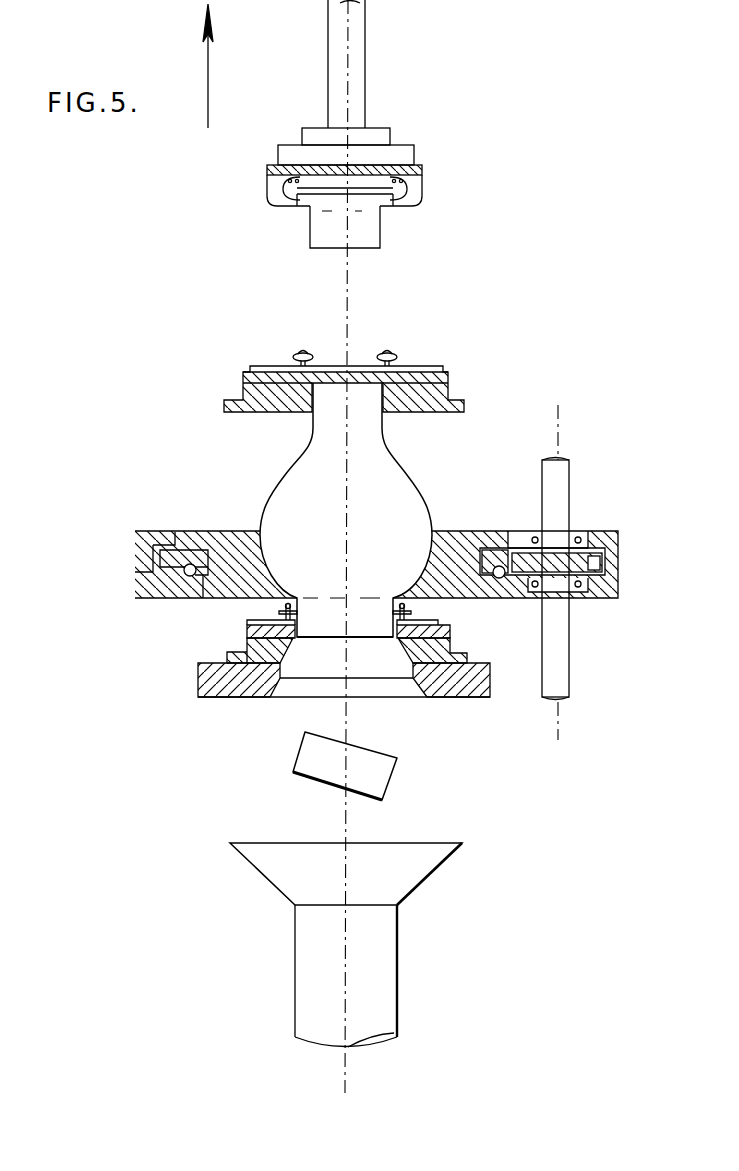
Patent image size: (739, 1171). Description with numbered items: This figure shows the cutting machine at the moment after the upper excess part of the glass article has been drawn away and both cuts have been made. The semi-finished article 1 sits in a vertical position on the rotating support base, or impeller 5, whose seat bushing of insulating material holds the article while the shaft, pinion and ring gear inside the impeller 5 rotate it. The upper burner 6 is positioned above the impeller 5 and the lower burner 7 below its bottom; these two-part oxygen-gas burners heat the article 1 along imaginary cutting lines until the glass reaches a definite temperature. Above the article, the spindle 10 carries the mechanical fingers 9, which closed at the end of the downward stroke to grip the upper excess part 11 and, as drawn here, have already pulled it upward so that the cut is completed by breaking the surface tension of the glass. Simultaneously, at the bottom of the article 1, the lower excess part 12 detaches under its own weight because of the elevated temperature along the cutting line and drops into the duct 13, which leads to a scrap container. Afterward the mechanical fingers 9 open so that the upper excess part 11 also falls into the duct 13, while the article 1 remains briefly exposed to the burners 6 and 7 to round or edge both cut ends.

The semi-finished article 1 is at (267, 493).
The impeller 5 is at (620, 562).
The upper burner 6 is at (243, 392).
The lower burner 7 is at (245, 641).
The mechanical fingers 9 is at (407, 187).
The spindle 10 is at (365, 95).
The upper excess part 11 is at (310, 235).
The lower excess part 12 is at (378, 783).
The duct 13 is at (425, 878).